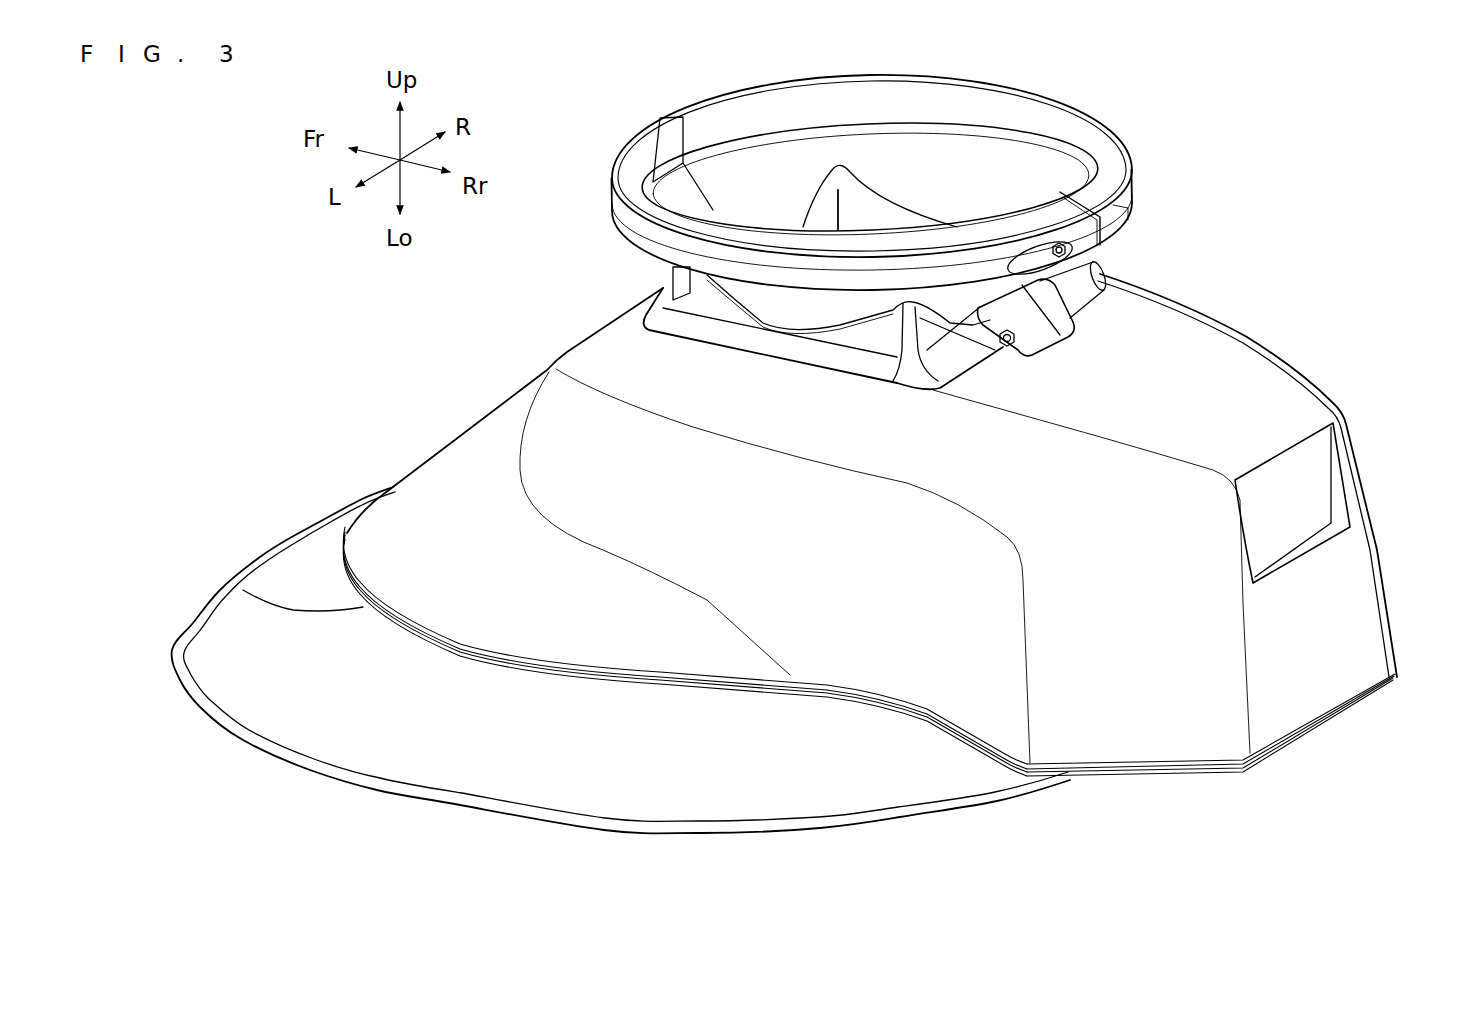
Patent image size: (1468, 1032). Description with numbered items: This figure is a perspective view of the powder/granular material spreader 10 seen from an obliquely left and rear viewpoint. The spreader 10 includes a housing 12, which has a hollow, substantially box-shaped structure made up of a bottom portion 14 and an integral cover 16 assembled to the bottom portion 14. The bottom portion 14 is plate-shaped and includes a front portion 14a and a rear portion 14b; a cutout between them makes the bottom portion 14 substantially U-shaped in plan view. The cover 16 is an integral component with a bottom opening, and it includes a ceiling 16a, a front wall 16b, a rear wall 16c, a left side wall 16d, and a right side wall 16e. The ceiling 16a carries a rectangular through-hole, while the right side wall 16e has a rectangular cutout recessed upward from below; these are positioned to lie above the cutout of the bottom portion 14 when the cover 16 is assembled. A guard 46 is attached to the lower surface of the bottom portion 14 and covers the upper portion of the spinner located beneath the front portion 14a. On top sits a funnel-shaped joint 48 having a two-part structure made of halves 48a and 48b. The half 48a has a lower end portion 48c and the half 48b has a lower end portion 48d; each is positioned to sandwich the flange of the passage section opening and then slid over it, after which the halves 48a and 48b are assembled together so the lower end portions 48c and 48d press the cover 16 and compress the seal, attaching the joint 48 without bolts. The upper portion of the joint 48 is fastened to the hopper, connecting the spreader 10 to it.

The powder/granular material spreader 10 is at (1318, 93).
The housing 12 is at (1303, 347).
The bottom portion 14 is at (878, 716).
The front portion 14a is at (243, 590).
The rear portion 14b is at (1198, 777).
The cover 16 is at (1322, 386).
The ceiling 16a is at (1190, 323).
The front wall 16b is at (505, 422).
The rear wall 16c is at (1362, 587).
The left side wall 16d is at (756, 590).
The right side wall 16e is at (1250, 340).
The guard 46 is at (471, 778).
The joint 48 is at (697, 86).
The half 48a is at (632, 208).
The half 48b is at (807, 83).
The lower end portion 48c is at (662, 330).
The lower end portion 48d is at (1083, 280).